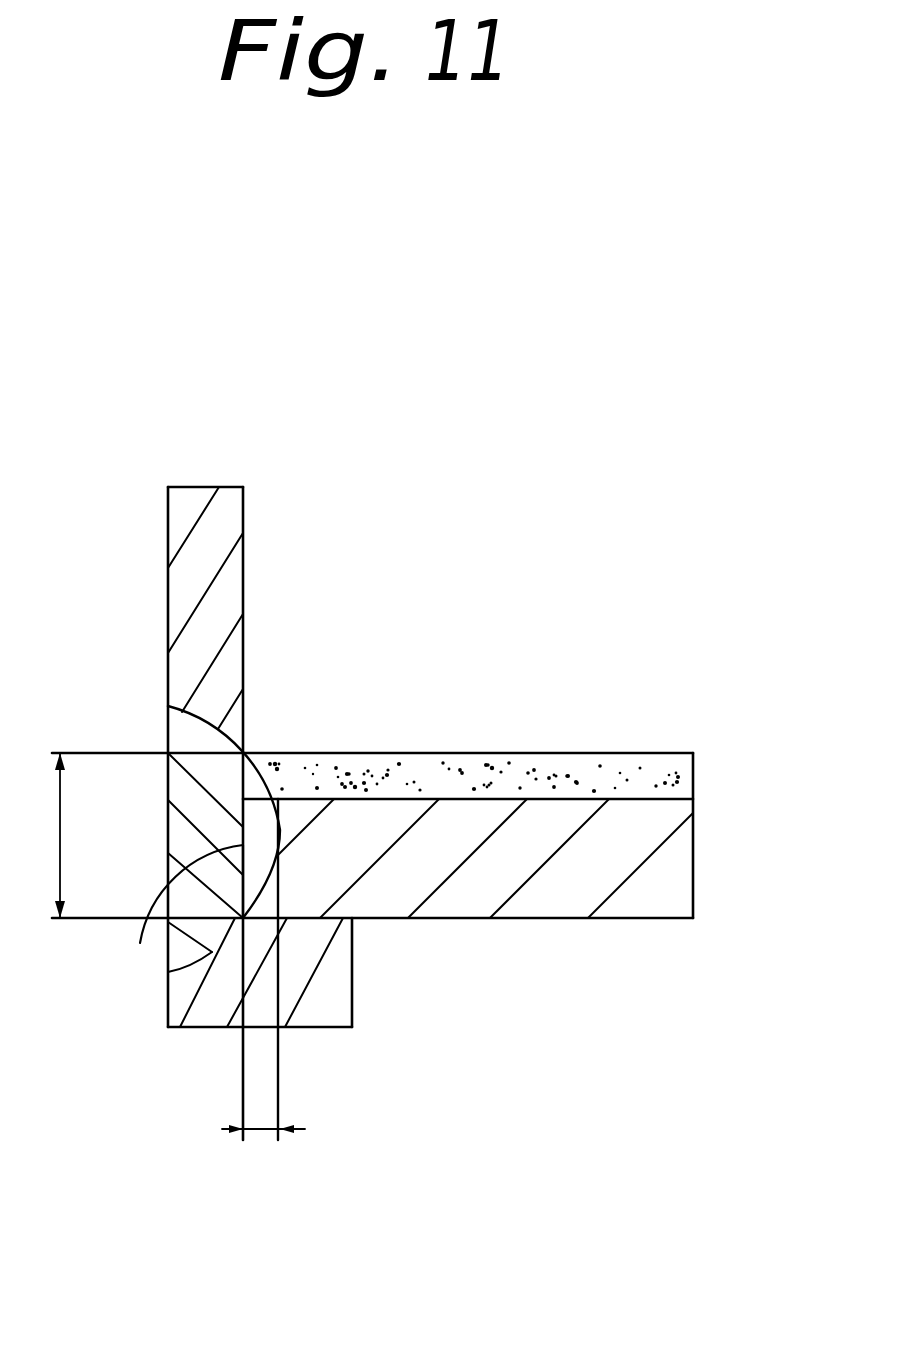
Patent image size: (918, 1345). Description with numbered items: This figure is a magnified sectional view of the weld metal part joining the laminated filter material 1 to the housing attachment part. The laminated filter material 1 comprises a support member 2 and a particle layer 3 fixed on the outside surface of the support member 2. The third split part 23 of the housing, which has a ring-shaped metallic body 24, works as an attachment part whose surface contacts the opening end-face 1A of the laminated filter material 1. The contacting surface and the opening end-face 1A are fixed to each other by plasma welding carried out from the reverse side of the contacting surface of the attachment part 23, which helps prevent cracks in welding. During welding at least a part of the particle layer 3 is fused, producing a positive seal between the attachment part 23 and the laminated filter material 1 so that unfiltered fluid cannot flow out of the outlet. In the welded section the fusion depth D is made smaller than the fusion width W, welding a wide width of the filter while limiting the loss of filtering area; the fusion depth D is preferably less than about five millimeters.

The laminated filter material 1 is at (412, 759).
The opening end-face 1A is at (140, 943).
The support member 2 is at (412, 858).
The particle layer 3 is at (412, 818).
The third split part 23 is at (165, 608).
The ring-shaped metallic body 24 is at (278, 757).
The fusion width W is at (52, 835).
The fusion depth D is at (259, 1130).